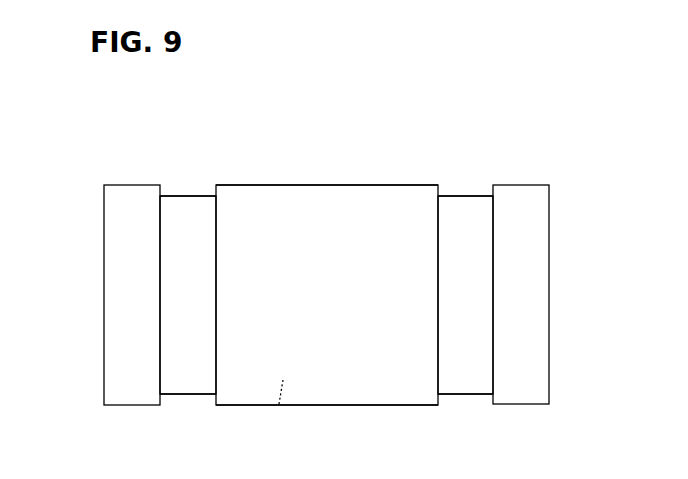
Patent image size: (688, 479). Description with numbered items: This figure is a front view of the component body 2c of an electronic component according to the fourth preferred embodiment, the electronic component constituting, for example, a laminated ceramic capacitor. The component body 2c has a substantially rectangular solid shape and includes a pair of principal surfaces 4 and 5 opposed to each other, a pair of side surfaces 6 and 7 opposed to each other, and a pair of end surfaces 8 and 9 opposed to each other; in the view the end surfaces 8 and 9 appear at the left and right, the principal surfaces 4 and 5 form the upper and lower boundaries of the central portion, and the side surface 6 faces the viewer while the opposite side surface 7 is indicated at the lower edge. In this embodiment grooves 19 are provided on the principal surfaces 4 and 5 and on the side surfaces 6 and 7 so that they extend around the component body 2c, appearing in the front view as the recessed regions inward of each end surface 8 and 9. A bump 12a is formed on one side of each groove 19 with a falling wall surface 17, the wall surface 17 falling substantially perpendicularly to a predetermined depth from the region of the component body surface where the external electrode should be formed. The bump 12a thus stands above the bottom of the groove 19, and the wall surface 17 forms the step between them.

The component body 2c is at (60, 105).
The principal surface 4 is at (366, 183).
The principal surface 5 is at (345, 405).
The side surface 6 is at (302, 224).
The side surface 7 is at (278, 405).
The end surface 8 is at (104, 295).
The end surface 9 is at (549, 270).
The bump 12a is at (161, 188).
The wall surface 17 is at (160, 235).
The groove 19 is at (188, 396).